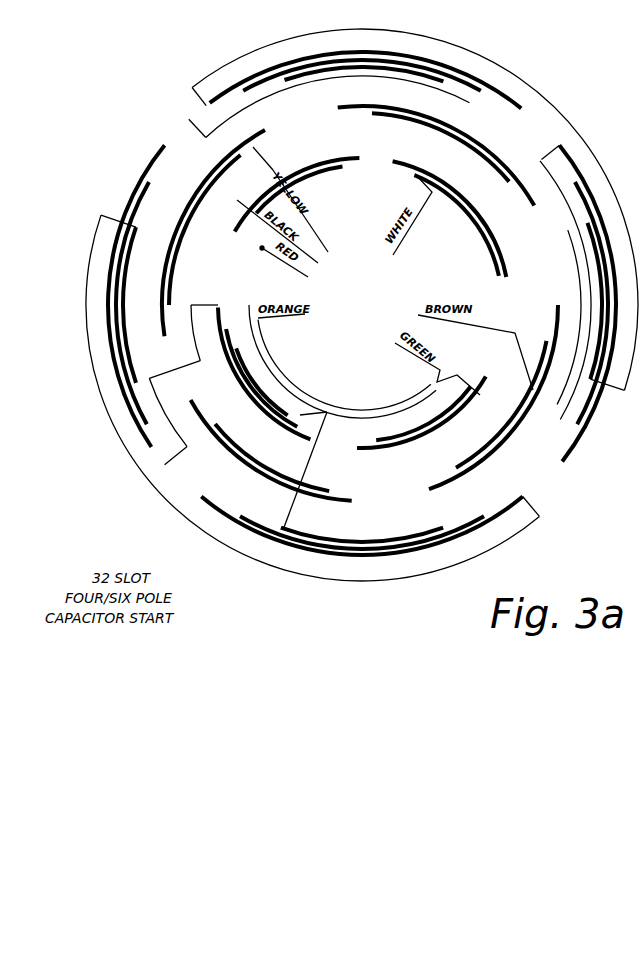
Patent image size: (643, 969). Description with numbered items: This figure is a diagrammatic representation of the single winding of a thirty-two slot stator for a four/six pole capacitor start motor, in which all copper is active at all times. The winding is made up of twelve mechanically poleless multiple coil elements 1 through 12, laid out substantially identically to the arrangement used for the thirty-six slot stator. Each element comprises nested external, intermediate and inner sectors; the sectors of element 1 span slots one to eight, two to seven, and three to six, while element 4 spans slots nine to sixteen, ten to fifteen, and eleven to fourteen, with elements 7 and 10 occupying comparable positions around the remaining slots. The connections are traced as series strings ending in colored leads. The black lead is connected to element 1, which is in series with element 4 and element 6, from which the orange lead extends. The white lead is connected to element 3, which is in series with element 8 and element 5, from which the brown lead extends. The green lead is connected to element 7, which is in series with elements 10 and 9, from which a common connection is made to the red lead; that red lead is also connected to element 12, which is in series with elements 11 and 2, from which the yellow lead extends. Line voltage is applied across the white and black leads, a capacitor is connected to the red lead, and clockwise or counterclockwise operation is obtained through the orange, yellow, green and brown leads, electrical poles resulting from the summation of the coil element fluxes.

The element 1 is at (366, 70).
The element 2 is at (436, 155).
The element 3 is at (450, 219).
The element 4 is at (593, 303).
The element 5 is at (493, 381).
The element 6 is at (421, 414).
The element 7 is at (361, 534).
The element 8 is at (271, 453).
The element 9 is at (264, 374).
The element 10 is at (131, 296).
The element 11 is at (210, 233).
The element 12 is at (297, 190).